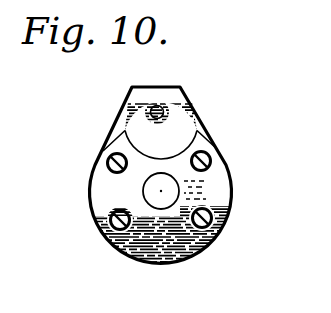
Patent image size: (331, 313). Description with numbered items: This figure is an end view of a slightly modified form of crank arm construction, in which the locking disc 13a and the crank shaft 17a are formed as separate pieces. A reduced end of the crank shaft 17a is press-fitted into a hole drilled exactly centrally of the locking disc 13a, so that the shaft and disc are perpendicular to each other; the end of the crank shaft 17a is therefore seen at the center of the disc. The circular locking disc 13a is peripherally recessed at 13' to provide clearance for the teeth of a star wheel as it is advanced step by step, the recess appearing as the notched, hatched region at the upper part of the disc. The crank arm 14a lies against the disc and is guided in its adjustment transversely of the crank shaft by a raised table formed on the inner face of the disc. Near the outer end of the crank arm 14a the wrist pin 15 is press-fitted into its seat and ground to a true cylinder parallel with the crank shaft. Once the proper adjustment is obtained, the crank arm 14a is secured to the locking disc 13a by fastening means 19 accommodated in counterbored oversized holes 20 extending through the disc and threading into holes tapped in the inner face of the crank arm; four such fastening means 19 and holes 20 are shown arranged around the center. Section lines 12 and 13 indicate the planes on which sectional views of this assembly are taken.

The section line 12- 12 is at (146, 64).
The section line 13- 13 is at (158, 183).
The clearance recess 13' is at (138, 131).
The locking disc 13a is at (106, 232).
The crank arm 14a is at (189, 120).
The wrist pin 15 is at (164, 110).
The crank shaft 17a is at (161, 191).
The fastening means 19 is at (106, 165).
The counterbored oversized holes 20 is at (106, 148).